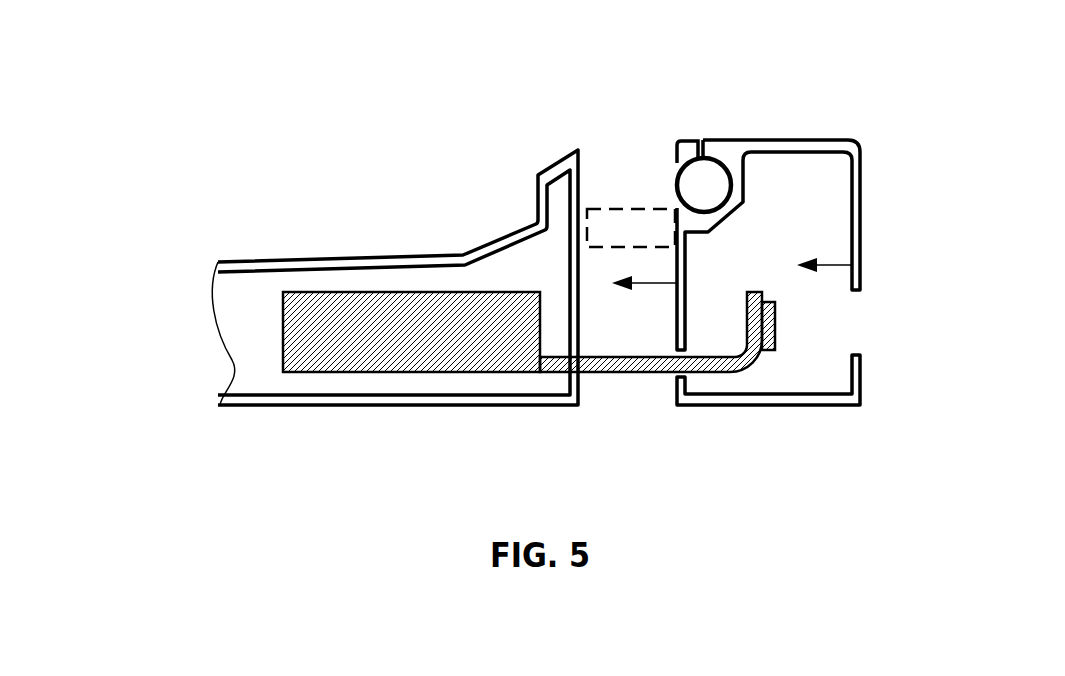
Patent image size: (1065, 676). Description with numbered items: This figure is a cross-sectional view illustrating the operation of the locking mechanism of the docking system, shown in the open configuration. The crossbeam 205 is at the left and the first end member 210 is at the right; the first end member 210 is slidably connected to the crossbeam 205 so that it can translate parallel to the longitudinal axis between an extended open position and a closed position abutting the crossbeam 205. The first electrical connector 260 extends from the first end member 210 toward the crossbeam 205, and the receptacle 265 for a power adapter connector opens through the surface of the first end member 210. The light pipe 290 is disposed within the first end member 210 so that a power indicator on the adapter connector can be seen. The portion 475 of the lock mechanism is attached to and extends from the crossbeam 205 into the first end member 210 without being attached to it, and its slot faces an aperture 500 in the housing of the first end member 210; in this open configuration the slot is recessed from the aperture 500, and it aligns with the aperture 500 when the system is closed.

The crossbeam 205 is at (303, 258).
The first end member 210 is at (862, 407).
The first electrical connector 260 is at (623, 208).
The receptacle 265 is at (668, 180).
The light pipe 290 is at (700, 140).
The portion of the lock mechanism 475 is at (462, 372).
The aperture 500 is at (888, 316).